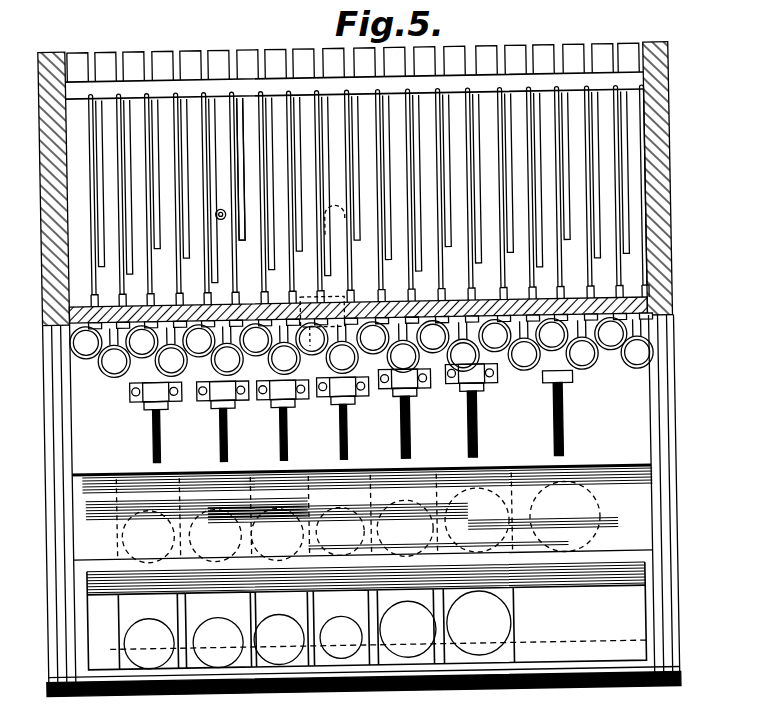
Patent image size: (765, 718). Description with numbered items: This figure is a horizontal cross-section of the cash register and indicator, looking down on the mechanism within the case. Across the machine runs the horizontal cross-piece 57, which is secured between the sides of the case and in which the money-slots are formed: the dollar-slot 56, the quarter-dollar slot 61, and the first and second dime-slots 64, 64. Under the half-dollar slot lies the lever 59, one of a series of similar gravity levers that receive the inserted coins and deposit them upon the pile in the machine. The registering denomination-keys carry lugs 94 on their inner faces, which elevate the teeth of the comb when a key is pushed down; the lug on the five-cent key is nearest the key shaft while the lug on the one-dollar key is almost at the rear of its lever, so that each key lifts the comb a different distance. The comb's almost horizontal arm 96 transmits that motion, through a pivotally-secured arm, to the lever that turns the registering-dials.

The lugs 94 is at (437, 182).
The horizontal arm 96 is at (222, 139).
The dime-slot 64 is at (321, 419).
The quarter-dollar slot 61 is at (412, 414).
The lever 59 is at (484, 410).
The dollar-slot 56 is at (557, 443).
The horizontal cross-piece 57 is at (362, 462).